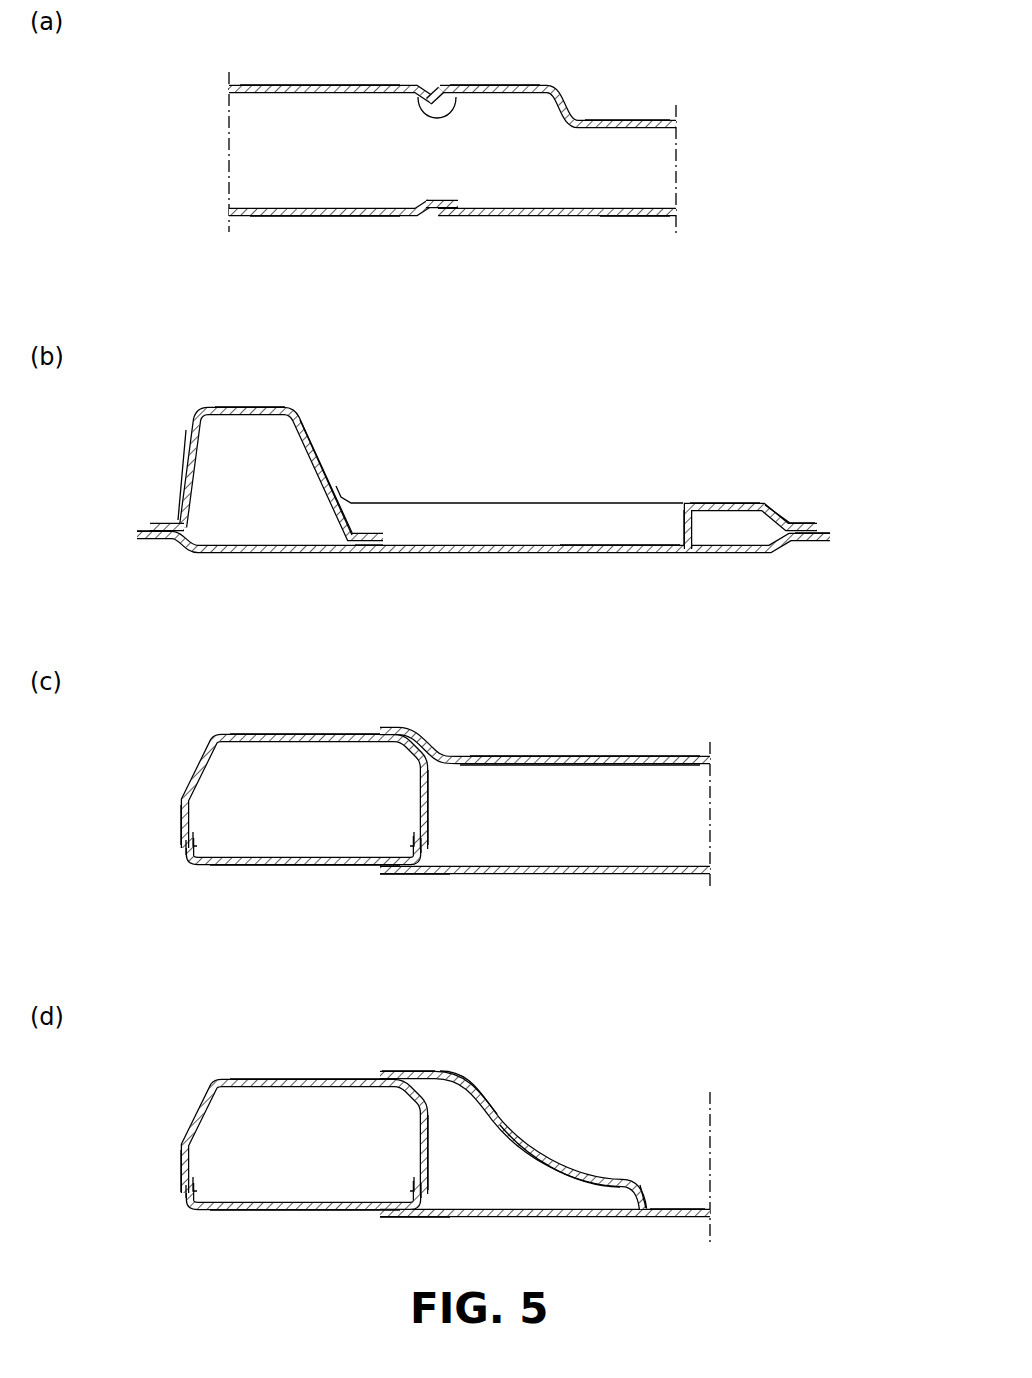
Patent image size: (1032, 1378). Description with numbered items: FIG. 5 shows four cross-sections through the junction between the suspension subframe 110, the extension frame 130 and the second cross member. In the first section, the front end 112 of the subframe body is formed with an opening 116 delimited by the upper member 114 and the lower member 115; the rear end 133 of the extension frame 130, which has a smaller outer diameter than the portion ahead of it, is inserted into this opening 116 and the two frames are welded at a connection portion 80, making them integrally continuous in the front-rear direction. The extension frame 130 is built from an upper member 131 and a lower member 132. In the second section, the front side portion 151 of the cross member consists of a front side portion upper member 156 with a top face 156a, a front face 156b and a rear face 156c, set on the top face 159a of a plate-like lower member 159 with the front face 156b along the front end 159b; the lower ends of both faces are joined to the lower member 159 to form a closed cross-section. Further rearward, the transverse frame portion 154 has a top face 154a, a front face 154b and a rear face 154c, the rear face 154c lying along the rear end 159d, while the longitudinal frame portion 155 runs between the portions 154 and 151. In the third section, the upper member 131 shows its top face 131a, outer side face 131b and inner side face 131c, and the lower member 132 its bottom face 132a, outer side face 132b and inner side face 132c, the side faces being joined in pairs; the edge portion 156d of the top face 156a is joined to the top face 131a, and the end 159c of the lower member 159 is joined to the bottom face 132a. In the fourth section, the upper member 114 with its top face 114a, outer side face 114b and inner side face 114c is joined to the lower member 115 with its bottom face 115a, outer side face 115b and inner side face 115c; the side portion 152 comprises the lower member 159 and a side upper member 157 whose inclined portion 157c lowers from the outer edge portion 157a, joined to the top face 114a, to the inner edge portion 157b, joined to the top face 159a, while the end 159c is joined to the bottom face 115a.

The connection portion 80 is at (408, 68).
The suspension subframe 110 is at (651, 233).
The front end 112 is at (490, 77).
The upper member 114 is at (623, 111).
The top face 114a is at (316, 1078).
The outer side face 114b is at (181, 1157).
The inner side face 114c is at (430, 1150).
The lower member 115 is at (515, 217).
The bottom face 115a is at (242, 1211).
The outer side face 115b is at (190, 1201).
The inner side face 115c is at (422, 1196).
The opening 116 is at (426, 93).
The extension frame 130 is at (256, 228).
The upper member 131 is at (318, 84).
The top face 131a is at (272, 84).
The outer side face 131b is at (181, 812).
The inner side face 131c is at (430, 807).
The lower member 132 is at (318, 217).
The bottom face 132a is at (244, 866).
The outer side face 132b is at (190, 856).
The inner side face 132c is at (422, 853).
The rear end 133 is at (427, 217).
The front side portion 151 is at (195, 396).
The side portion 152 is at (462, 1055).
The transverse frame portion 154 is at (742, 504).
The top face 154a is at (716, 504).
The front face 154b is at (689, 532).
The rear face 154c is at (782, 512).
The longitudinal frame portion 155 is at (520, 502).
The front side portion upper member 156 is at (248, 406).
The top face 156a is at (285, 406).
The front face 156b is at (182, 462).
The rear face 156c is at (312, 436).
The edge portion 156d is at (397, 727).
The side upper member 157 is at (468, 1096).
The outer edge portion 157a is at (388, 1070).
The inner edge portion 157b is at (646, 1195).
The inclined portion 157c is at (515, 1135).
The lower member 159 is at (508, 553).
The top face 159a is at (568, 545).
The front end 159b is at (130, 537).
The end 159c is at (388, 875).
The rear end 159d is at (830, 541).